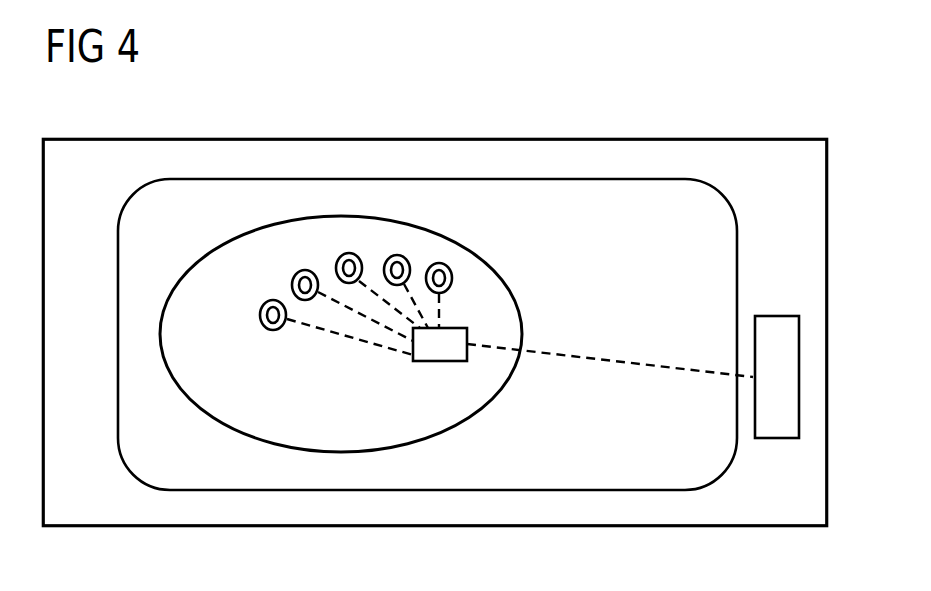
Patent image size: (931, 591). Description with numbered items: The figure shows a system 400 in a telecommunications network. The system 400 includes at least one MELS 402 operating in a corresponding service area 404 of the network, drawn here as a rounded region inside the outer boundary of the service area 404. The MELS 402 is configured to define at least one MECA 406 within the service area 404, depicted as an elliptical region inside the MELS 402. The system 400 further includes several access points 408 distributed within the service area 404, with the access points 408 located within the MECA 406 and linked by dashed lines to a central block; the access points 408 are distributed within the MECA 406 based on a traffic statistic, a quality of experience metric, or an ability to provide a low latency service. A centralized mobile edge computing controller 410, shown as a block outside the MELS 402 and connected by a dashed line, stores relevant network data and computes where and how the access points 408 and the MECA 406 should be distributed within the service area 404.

The system 400 is at (750, 102).
The MELS 402 is at (602, 178).
The service area 404 is at (445, 138).
The MECA 406 is at (516, 300).
The access point 408 is at (438, 263).
The centralized mobile edge computing controller 410 is at (775, 316).